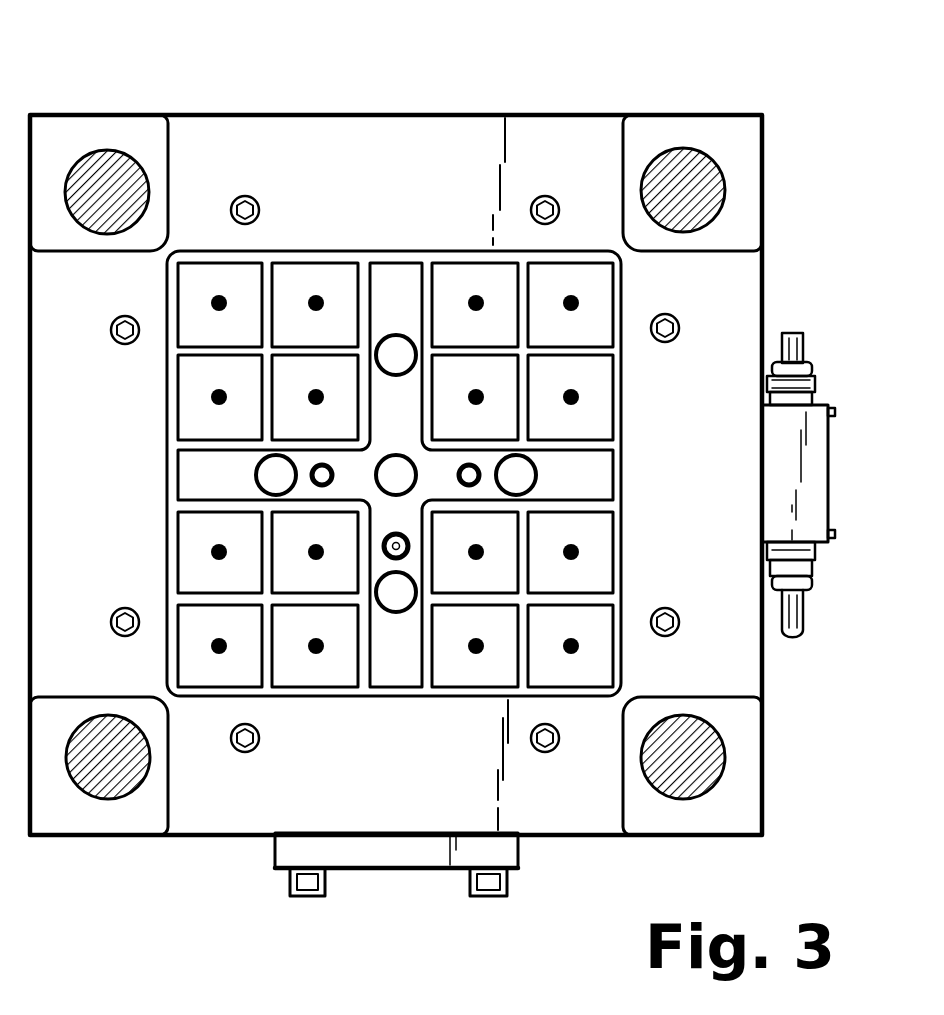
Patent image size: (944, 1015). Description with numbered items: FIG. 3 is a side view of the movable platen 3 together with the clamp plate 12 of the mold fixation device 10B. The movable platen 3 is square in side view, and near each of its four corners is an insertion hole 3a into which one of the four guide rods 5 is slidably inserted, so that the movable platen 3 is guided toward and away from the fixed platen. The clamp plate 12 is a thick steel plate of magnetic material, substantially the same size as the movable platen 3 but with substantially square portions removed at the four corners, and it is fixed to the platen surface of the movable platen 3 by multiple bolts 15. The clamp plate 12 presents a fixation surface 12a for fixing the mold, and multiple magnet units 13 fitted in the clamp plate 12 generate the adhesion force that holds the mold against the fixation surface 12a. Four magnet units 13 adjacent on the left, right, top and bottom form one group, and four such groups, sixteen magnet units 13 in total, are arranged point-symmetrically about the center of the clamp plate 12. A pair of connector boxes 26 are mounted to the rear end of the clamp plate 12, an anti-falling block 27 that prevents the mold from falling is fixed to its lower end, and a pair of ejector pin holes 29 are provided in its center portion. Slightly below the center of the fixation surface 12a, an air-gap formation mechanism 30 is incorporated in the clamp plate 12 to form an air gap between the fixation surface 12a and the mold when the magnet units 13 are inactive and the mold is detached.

The movable platen 3 is at (676, 110).
The insertion hole 3a is at (718, 180).
The guide rod 5 is at (700, 770).
The mold fixation device 10B is at (378, 113).
The clamp plate 12 is at (163, 786).
The fixation surface 12a is at (463, 132).
The magnet unit 13 is at (258, 248).
The bolt 15 is at (677, 314).
The connector box 26 is at (830, 468).
The anti-falling block 27 is at (392, 858).
The ejector pin hole 29 is at (318, 465).
The air-gap formation mechanism 30 is at (408, 557).